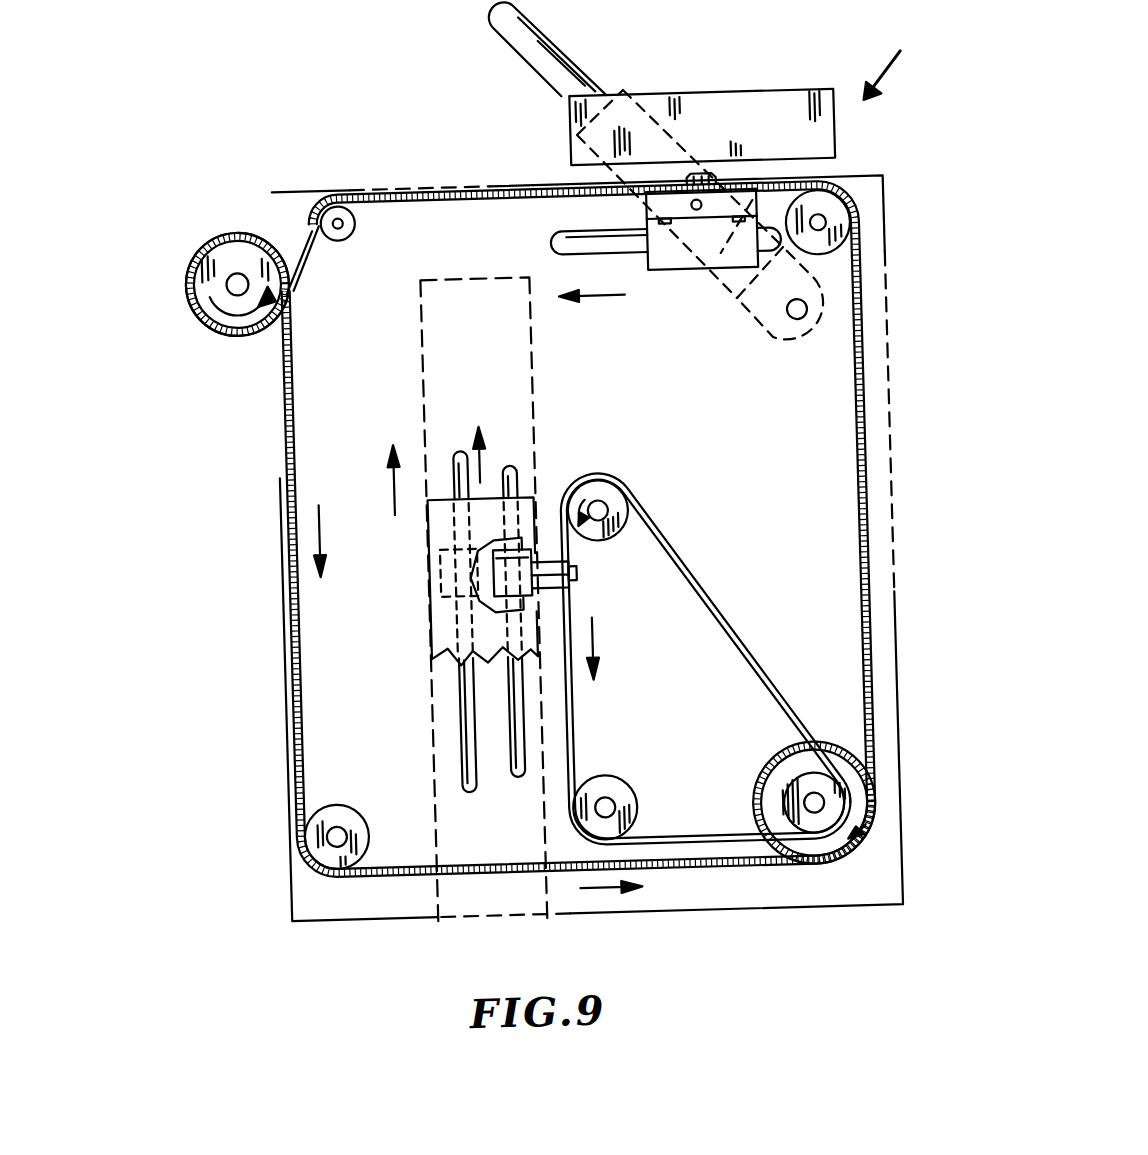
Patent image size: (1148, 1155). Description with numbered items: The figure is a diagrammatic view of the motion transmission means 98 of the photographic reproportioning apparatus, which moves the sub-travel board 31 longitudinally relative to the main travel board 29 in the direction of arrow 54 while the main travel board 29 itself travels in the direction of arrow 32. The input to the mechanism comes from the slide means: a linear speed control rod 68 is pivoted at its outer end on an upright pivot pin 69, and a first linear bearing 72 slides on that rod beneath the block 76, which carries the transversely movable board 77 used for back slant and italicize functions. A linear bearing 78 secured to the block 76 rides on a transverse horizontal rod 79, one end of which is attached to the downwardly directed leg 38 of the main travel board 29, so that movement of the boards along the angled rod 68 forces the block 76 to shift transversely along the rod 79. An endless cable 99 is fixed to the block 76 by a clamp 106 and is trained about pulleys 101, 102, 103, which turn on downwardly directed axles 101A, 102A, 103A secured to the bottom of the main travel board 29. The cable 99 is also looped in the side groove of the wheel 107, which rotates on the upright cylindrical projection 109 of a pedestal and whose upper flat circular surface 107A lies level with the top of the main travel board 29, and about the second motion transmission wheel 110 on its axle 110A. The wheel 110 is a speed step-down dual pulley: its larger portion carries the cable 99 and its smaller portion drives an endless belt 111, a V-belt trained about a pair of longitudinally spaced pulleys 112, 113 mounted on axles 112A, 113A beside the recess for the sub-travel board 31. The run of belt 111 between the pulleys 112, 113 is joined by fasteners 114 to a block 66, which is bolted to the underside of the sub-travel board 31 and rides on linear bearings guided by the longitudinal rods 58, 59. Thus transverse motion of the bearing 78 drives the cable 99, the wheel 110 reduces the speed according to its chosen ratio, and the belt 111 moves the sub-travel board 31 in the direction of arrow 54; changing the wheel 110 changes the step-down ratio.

The main travel board 29 is at (895, 409).
The sub-travel board 31 is at (443, 622).
The arrow 32 is at (396, 492).
The leg 38 is at (754, 340).
The arrow 54 is at (482, 470).
The longitudinal rod 58 is at (462, 722).
The longitudinal rod 59 is at (513, 780).
The block 66 is at (539, 604).
The linear speed control rod 68 is at (567, 35).
The pivot pin 69 is at (803, 325).
The first linear bearing 72 is at (636, 91).
The block 76 is at (772, 200).
The transversely movable board 77 is at (726, 96).
The linear bearing 78 is at (706, 272).
The transverse horizontal rod 79 is at (633, 249).
The motion transmission means 98 is at (881, 61).
The endless cable 99 is at (285, 450).
The pulley 101 is at (840, 196).
The axle 101A is at (835, 229).
The pulley 102 is at (346, 234).
The axle 102A is at (352, 219).
The pulley 103 is at (314, 838).
The axle 103A is at (331, 820).
The clamp 106 is at (712, 178).
The wheel 107 is at (212, 300).
The upper flat circular surface 107A is at (240, 265).
The cylindrical projection 109 is at (240, 275).
The second motion transmission wheel 110 is at (783, 815).
The axle 110A is at (805, 800).
The endless belt 111 is at (704, 604).
The pulley 112 is at (618, 795).
The axle 112A is at (600, 798).
The pulley 113 is at (625, 520).
The axle 113A is at (600, 500).
The fasteners 114 is at (553, 576).